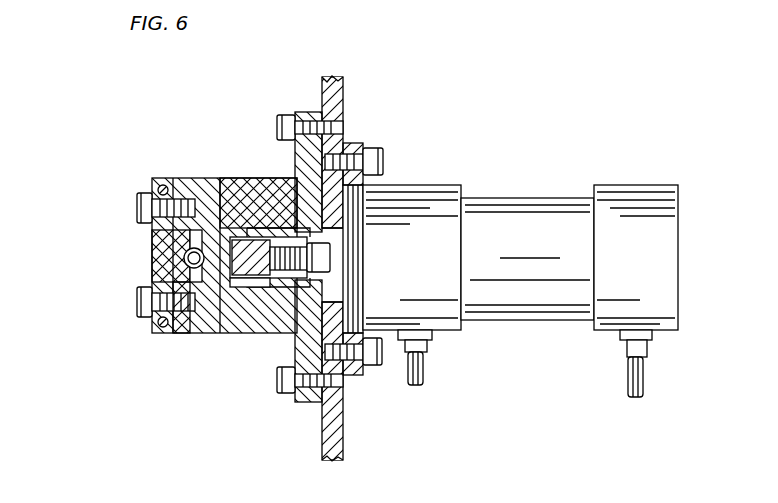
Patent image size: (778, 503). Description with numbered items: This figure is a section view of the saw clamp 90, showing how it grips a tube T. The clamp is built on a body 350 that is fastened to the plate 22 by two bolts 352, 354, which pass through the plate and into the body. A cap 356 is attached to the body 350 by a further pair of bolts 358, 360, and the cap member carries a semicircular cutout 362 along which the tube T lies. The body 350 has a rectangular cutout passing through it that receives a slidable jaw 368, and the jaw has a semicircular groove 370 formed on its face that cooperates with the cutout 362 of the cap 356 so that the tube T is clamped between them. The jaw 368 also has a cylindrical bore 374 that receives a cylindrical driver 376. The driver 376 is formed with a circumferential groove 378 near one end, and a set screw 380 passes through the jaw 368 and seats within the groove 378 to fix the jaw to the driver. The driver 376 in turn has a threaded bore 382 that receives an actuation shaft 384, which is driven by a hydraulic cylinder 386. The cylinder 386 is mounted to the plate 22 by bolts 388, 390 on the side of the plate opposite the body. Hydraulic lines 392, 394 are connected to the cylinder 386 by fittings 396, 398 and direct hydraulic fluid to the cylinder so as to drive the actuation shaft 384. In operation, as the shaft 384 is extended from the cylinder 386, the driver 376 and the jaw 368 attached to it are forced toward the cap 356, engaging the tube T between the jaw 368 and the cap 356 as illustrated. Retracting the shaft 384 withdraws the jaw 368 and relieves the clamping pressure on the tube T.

The saw clamp 90 is at (159, 124).
The plate 22 is at (336, 96).
The body 350 is at (200, 178).
The bolt 352 is at (285, 114).
The bolt 354 is at (278, 385).
The cap 356 is at (170, 268).
The bolt 358 is at (140, 200).
The bolt 360 is at (137, 304).
The semicircular cutout 362 is at (185, 258).
The slidable jaw 368 is at (226, 185).
The semicircular groove 370 is at (178, 333).
The cylindrical bore 374 is at (346, 240).
The cylindrical driver 376 is at (268, 292).
The circumferential groove 378 is at (210, 333).
The set screw 380 is at (270, 226).
The threaded bore 382 is at (305, 292).
The actuation shaft 384 is at (318, 258).
The hydraulic cylinder 386 is at (568, 197).
The bolt 388 is at (378, 368).
The bolt 390 is at (384, 162).
The hydraulic line 392 is at (424, 372).
The hydraulic line 394 is at (630, 380).
The fitting 396 is at (428, 342).
The fitting 398 is at (628, 344).
The tube T is at (185, 252).